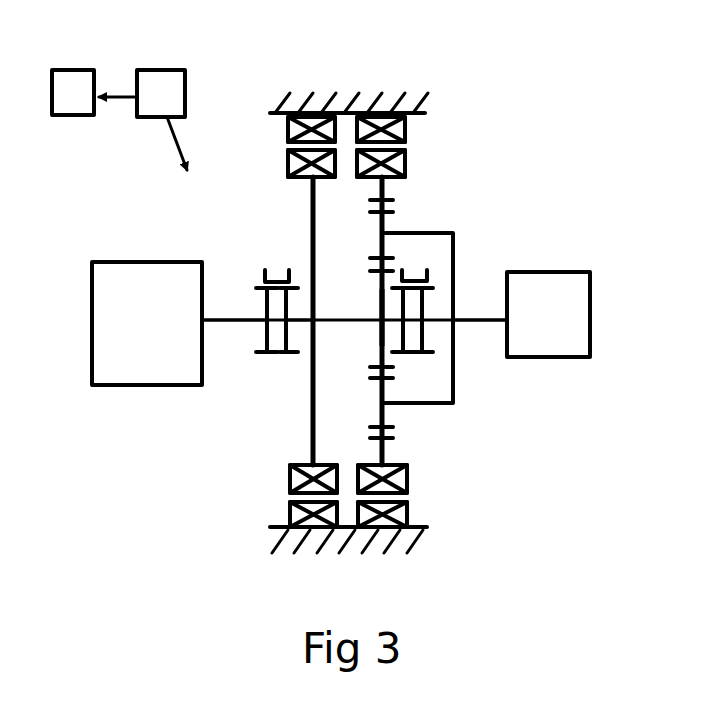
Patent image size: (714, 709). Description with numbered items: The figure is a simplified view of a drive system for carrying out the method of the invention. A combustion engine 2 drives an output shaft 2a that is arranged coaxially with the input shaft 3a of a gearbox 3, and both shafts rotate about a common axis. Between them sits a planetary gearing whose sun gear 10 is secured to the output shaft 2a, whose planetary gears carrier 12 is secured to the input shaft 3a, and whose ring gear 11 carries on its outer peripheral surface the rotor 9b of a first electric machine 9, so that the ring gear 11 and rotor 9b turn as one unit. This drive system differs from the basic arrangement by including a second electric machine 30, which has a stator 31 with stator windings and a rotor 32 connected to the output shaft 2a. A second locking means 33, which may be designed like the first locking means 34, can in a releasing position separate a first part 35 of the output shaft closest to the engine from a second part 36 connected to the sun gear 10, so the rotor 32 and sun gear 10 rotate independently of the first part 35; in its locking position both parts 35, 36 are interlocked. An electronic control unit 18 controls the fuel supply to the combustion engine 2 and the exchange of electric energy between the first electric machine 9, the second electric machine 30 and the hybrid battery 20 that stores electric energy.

The combustion engine 2 is at (133, 386).
The output shaft of the combustion engine 2a is at (340, 326).
The gearbox 3 is at (548, 268).
The input shaft of the gearbox 3a is at (483, 323).
The first electric machine 9 is at (405, 290).
The rotor 9b is at (360, 321).
The sun gear 10 is at (378, 315).
The ring gear 11 is at (402, 184).
The planetary gears carrier 12 is at (466, 286).
The electronic control unit 18 is at (160, 80).
The hybrid battery 20 is at (78, 68).
The second electric machine 30 is at (349, 127).
The stator 31 is at (290, 518).
The rotor 32 is at (287, 470).
The second locking means 33 is at (272, 270).
The first locking means 34 is at (415, 268).
The first part of the output shaft 35 is at (237, 325).
The second part of the output shaft 36 is at (300, 328).